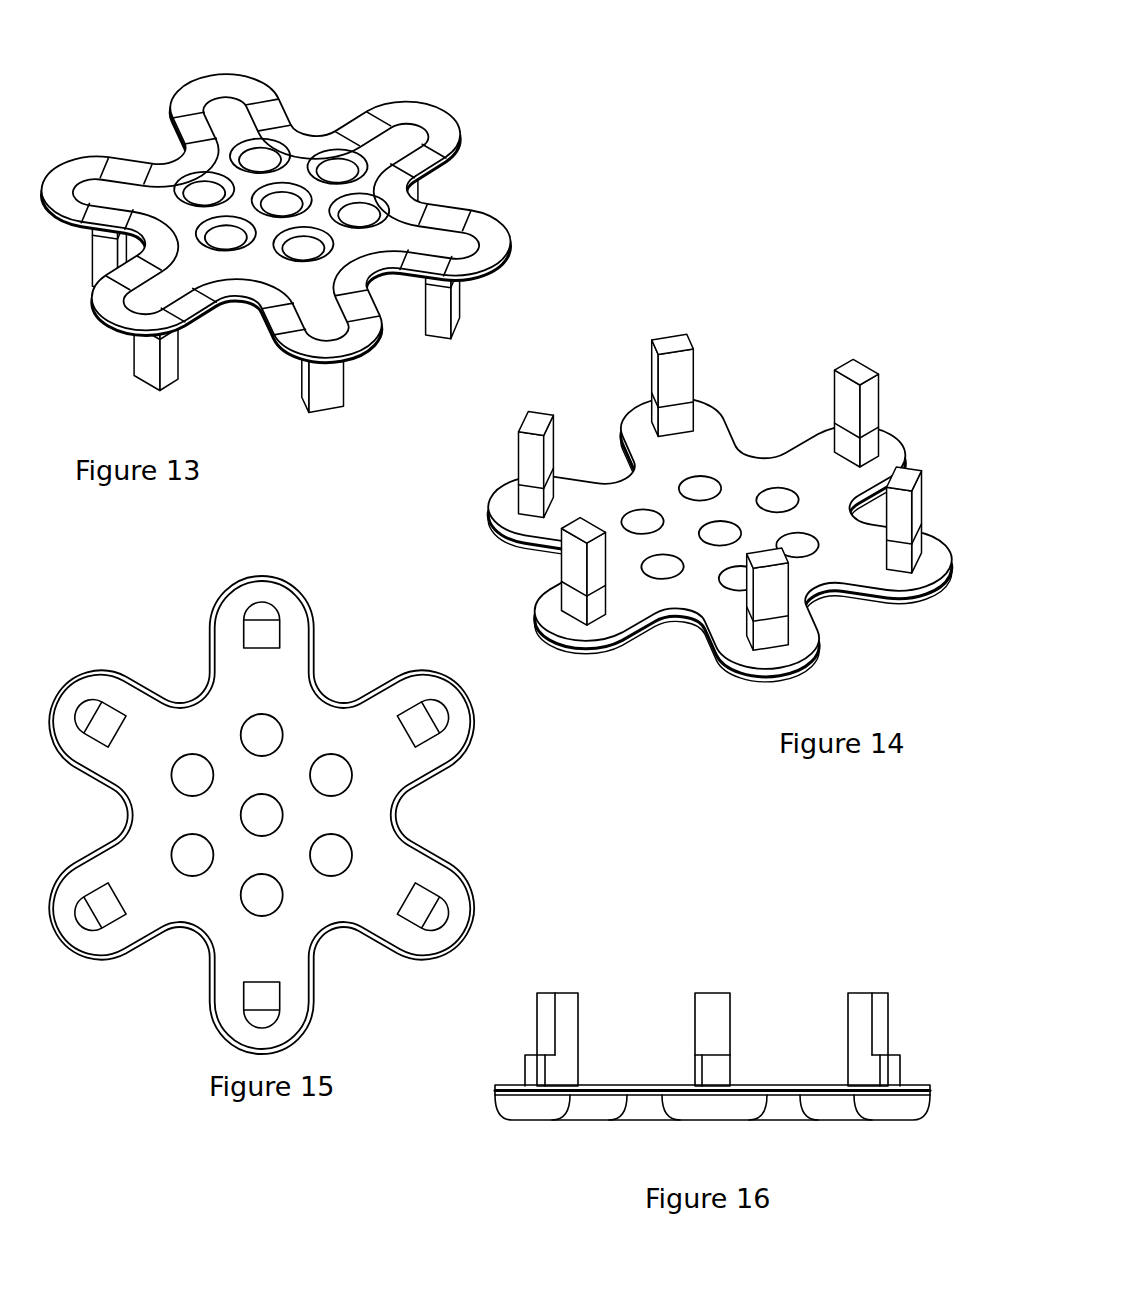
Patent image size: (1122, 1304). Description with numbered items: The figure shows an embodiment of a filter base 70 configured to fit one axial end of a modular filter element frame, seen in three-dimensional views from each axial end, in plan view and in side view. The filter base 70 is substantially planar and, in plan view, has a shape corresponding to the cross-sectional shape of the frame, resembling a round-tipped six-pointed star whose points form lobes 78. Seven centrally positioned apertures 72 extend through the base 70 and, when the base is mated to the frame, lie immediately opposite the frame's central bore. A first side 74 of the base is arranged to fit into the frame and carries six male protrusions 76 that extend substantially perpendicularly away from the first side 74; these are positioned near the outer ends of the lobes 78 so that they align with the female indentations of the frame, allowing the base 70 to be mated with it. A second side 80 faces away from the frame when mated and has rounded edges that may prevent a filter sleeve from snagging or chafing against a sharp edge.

In FIG. 13, the filter base 70 is at (294, 223).
In FIG. 14, the filter base 70 is at (719, 520).
In FIG. 15, the filter base 70 is at (302, 809).
In FIG. 16, the filter base 70 is at (712, 994).
In FIG. 13, the apertures 72 is at (279, 201).
In FIG. 14, the apertures 72 is at (718, 528).
In FIG. 15, the apertures 72 is at (266, 810).
In FIG. 13, the first side 74 is at (276, 218).
In FIG. 14, the first side 74 is at (691, 548).
In FIG. 15, the first side 74 is at (273, 948).
In FIG. 16, the first side 74 is at (712, 1102).
In FIG. 13, the male protrusions 76 is at (450, 323).
In FIG. 14, the male protrusions 76 is at (593, 378).
In FIG. 15, the male protrusions 76 is at (425, 893).
In FIG. 16, the male protrusions 76 is at (867, 1007).
In FIG. 13, the lobes 78 is at (490, 237).
In FIG. 14, the lobes 78 is at (938, 560).
In FIG. 15, the lobes 78 is at (84, 688).
In FIG. 13, the second side 80 is at (196, 157).